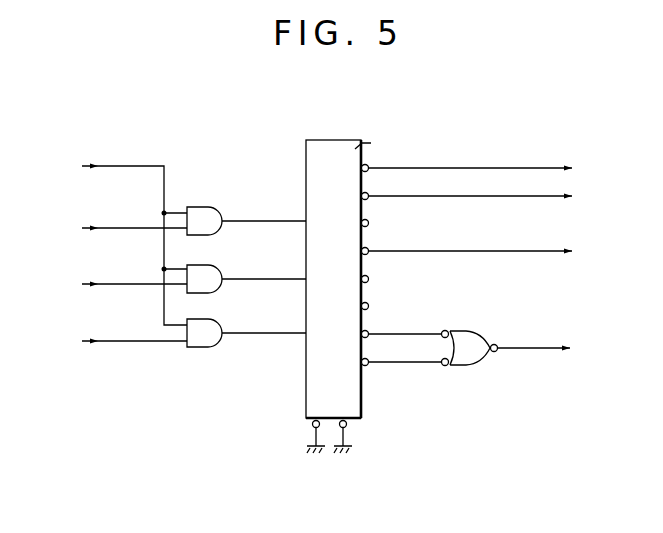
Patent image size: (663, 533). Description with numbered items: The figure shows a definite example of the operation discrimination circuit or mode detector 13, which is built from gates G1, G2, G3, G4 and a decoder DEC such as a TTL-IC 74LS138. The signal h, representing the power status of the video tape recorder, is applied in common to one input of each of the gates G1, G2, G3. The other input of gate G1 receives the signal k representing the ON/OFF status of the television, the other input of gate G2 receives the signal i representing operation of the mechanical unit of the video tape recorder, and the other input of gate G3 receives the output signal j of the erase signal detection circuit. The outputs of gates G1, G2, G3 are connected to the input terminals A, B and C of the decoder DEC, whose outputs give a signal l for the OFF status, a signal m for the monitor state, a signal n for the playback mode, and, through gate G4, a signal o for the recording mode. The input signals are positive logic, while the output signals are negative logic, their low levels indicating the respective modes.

The mode detector 13 is at (330, 304).
The gate G1 is at (210, 213).
The gate G2 is at (210, 270).
The gate G3 is at (216, 327).
The gate G4 is at (473, 340).
The decoder DEC is at (343, 140).